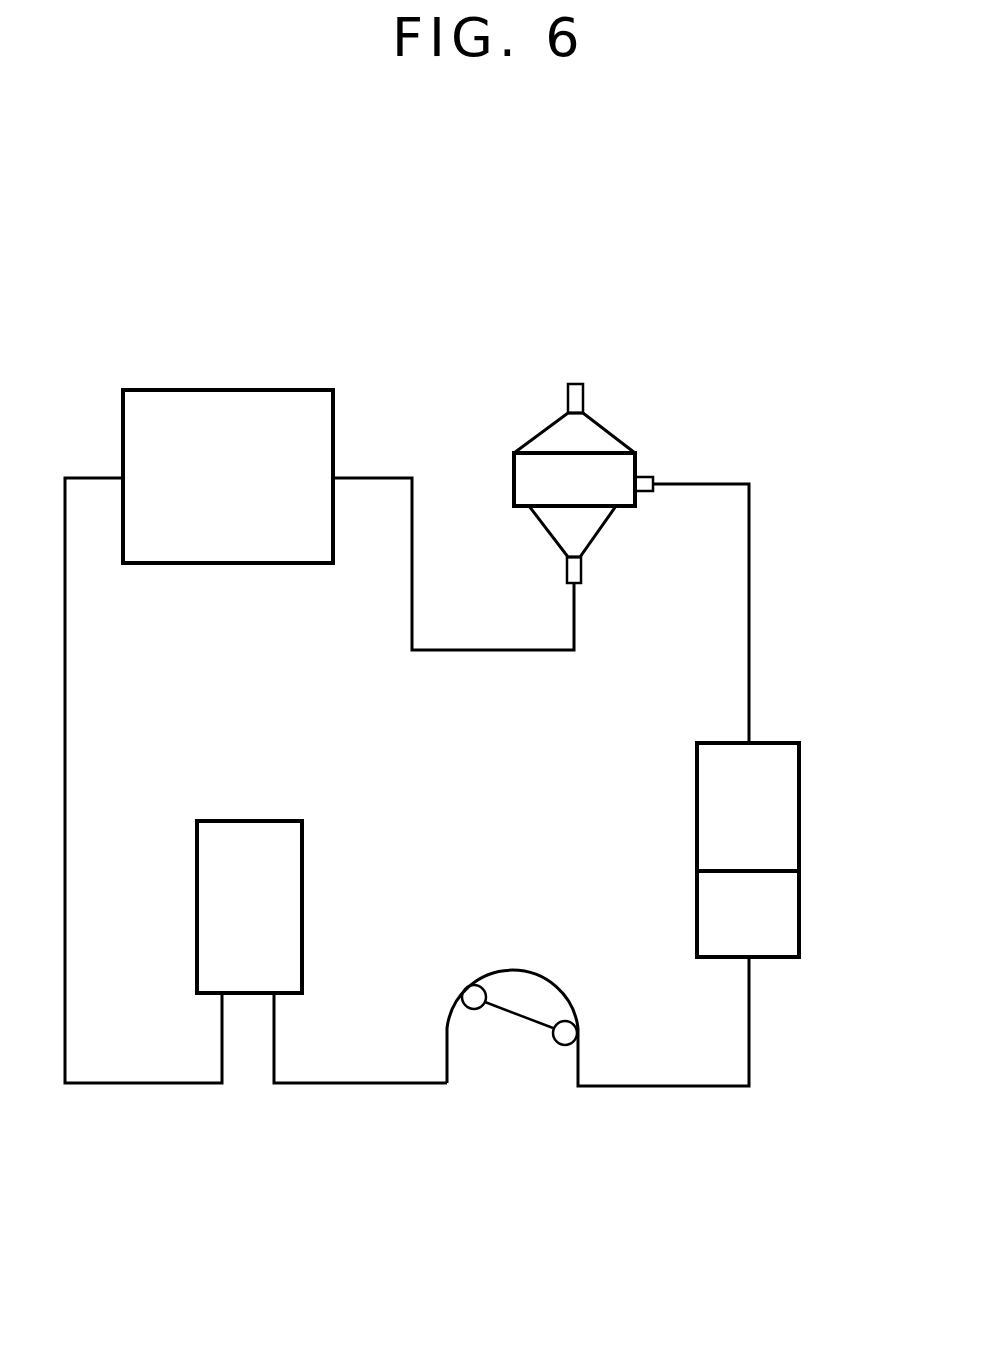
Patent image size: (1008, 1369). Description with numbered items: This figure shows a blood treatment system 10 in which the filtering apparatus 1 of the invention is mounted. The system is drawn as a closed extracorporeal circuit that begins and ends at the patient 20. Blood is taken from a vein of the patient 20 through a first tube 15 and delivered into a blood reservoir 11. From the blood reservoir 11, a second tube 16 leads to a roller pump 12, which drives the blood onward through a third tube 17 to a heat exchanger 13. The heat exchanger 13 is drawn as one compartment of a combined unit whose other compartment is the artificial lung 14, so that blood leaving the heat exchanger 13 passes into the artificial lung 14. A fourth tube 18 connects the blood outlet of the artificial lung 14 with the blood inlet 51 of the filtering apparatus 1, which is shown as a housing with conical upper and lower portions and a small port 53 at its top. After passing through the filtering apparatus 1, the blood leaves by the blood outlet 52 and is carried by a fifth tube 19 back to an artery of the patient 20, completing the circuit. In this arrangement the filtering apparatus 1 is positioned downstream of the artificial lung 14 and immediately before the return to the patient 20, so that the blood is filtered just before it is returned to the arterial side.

The filtering apparatus 1 is at (538, 437).
The blood treatment system 10 is at (790, 341).
The blood reservoir 11 is at (252, 858).
The roller pump 12 is at (513, 963).
The heat exchanger 13 is at (780, 927).
The artificial lung 14 is at (780, 818).
The first tube 15 is at (67, 700).
The second tube 16 is at (368, 1085).
The third tube 17 is at (683, 1088).
The fourth tube 18 is at (753, 578).
The fifth tube 19 is at (466, 652).
The patient 20 is at (241, 486).
The blood inlet 51 is at (645, 477).
The blood outlet 52 is at (581, 567).
The top inlet nozzle 53 is at (574, 387).